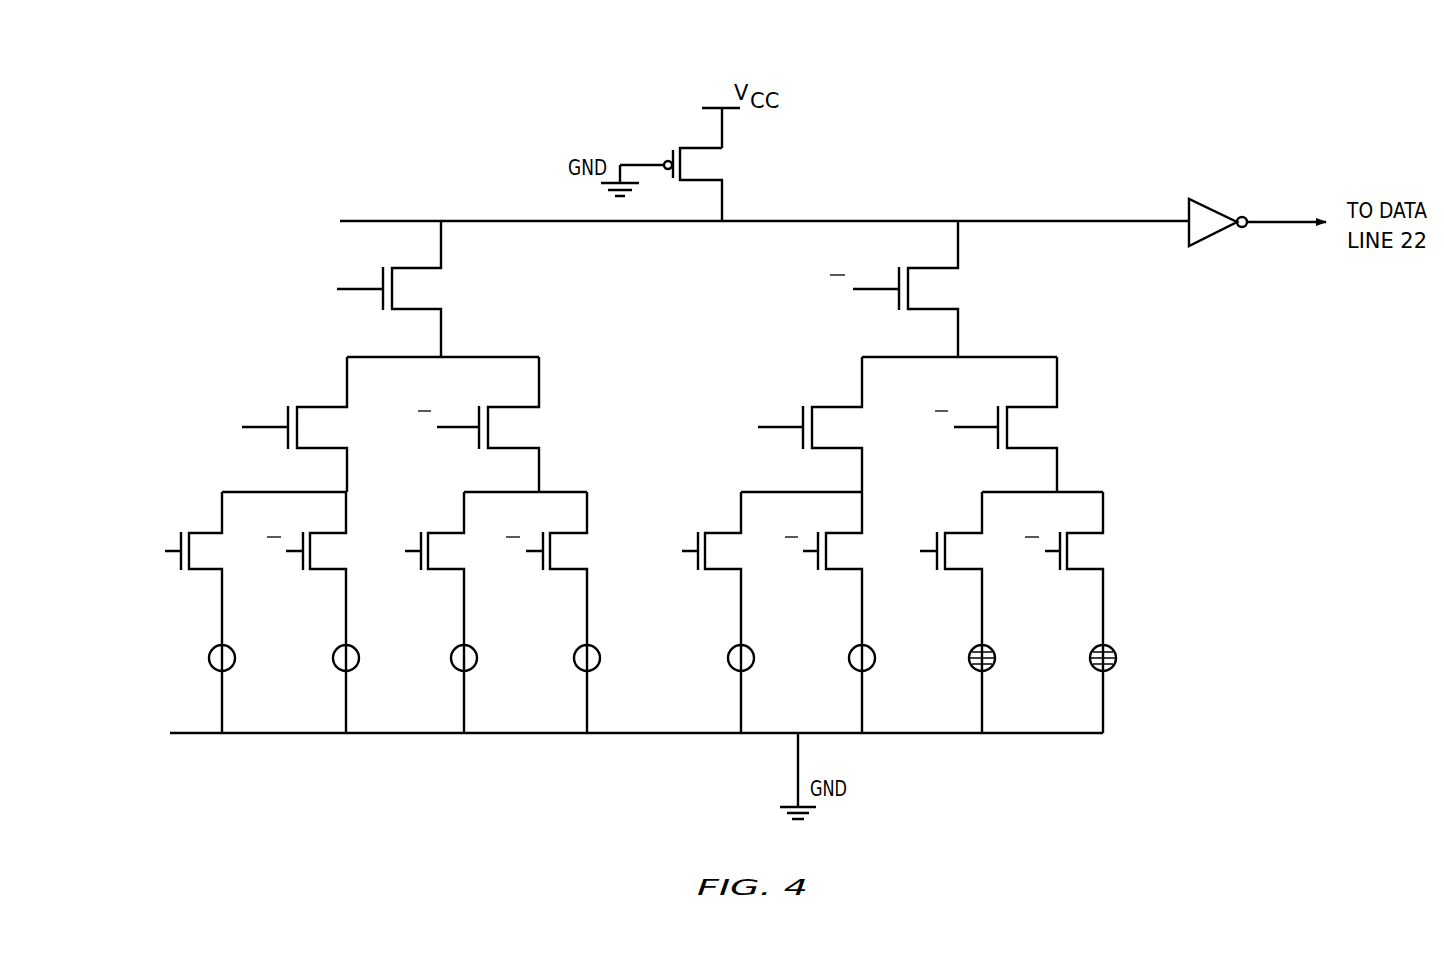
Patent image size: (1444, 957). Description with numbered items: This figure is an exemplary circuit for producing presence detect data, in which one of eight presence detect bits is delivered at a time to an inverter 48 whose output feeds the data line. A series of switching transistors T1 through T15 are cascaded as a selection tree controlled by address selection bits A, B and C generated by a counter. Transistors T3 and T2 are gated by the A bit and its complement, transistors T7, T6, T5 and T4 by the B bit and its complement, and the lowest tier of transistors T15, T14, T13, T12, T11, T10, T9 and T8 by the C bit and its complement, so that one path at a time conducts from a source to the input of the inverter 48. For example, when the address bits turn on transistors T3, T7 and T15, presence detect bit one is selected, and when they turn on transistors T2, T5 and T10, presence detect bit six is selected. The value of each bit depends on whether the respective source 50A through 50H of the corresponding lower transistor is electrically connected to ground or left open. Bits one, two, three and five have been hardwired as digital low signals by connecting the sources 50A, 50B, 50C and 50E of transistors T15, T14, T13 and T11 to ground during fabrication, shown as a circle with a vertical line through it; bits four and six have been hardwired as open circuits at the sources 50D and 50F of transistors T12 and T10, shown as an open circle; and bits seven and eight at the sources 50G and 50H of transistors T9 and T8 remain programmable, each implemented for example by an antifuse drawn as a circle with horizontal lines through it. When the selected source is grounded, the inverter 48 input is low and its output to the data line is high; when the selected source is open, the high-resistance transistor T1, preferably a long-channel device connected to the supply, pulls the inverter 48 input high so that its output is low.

The transistor T1 is at (719, 165).
The switching transistor T2 is at (954, 288).
The switching transistor T3 is at (436, 288).
The switching transistor T4 is at (1049, 428).
The switching transistor T5 is at (854, 428).
The switching transistor T6 is at (531, 428).
The switching transistor T7 is at (339, 428).
The switching transistor T8 is at (1097, 553).
The switching transistor T9 is at (970, 551).
The switching transistor T10 is at (853, 551).
The switching transistor T11 is at (733, 551).
The switching transistor T12 is at (575, 551).
The switching transistor T13 is at (453, 551).
The switching transistor T14 is at (337, 551).
The switching transistor T15 is at (216, 551).
The inverter 48 is at (1217, 200).
The source 50A is at (228, 627).
The source 50B is at (351, 627).
The source 50C is at (469, 627).
The source 50D is at (592, 627).
The source 50E is at (736, 627).
The source 50F is at (867, 627).
The source 50G is at (987, 627).
The source 50H is at (1108, 627).